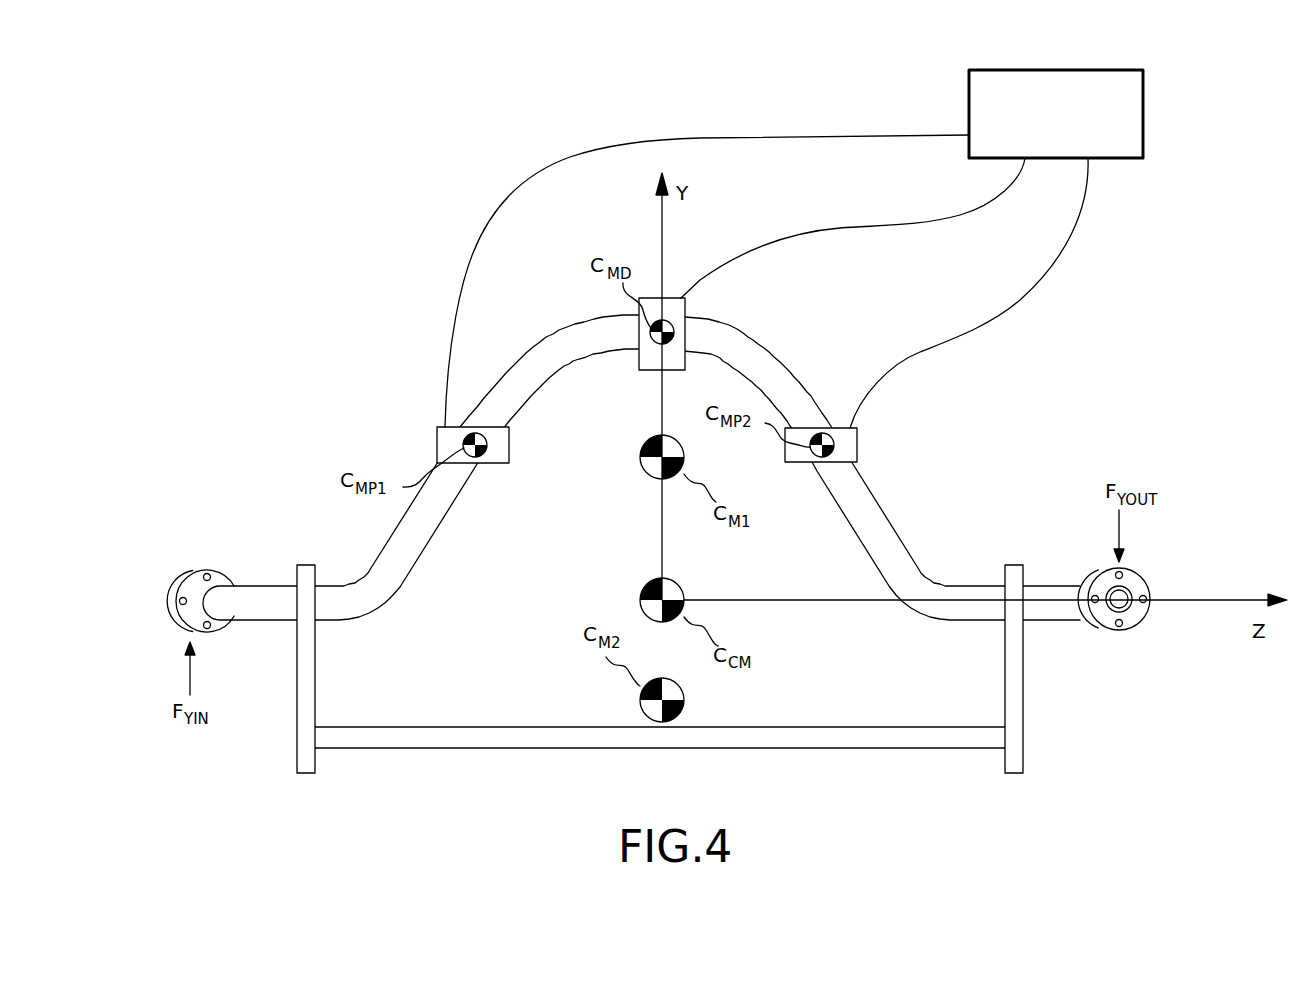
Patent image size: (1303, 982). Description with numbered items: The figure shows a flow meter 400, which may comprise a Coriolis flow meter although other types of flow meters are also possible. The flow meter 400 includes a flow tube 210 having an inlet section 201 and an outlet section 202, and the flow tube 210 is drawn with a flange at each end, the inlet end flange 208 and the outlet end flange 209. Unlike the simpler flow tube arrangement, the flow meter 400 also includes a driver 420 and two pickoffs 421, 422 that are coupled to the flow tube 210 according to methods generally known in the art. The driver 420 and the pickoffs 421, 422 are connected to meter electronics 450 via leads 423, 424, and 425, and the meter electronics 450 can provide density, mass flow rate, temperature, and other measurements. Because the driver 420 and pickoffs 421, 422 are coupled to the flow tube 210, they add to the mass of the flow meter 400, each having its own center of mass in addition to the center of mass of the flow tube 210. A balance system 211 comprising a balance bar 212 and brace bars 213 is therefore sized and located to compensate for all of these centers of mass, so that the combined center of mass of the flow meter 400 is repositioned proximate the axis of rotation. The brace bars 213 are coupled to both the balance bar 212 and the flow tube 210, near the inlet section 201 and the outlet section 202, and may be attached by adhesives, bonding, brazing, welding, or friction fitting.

The flow meter 400 is at (388, 322).
The meter electronics 450 is at (1143, 112).
The lead 424 is at (615, 148).
The lead 423 is at (850, 222).
The lead 425 is at (990, 323).
The driver 420 is at (638, 352).
The pickoff 421 is at (509, 462).
The pickoff 422 is at (857, 462).
The flow tube 210 is at (818, 406).
The inlet flange 208 is at (184, 612).
The outlet flange 209 is at (1135, 626).
The inlet section 201 is at (245, 620).
The outlet section 202 is at (1087, 622).
The balance bar 212 is at (822, 740).
The brace bars 213 is at (306, 773).
The balance system 211 is at (1083, 753).